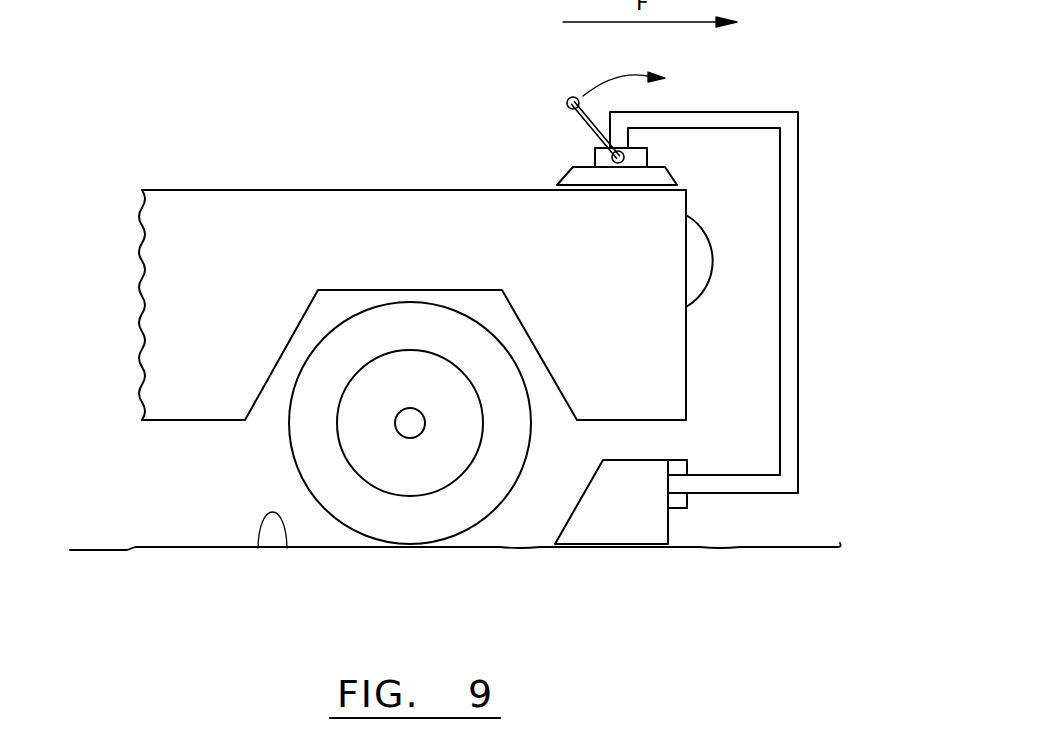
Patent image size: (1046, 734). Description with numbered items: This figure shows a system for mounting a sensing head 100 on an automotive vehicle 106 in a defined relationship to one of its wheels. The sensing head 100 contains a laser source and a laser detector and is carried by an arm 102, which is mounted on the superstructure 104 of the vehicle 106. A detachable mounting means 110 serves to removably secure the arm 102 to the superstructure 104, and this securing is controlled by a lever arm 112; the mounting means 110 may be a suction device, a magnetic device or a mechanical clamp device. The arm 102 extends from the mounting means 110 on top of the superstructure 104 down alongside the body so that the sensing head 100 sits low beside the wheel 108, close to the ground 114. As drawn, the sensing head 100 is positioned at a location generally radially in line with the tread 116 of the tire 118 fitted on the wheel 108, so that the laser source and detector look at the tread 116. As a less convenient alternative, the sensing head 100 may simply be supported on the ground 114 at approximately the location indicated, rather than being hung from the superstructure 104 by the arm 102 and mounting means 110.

The sensing head 100 is at (682, 525).
The arm 102 is at (798, 493).
The superstructure 104 is at (340, 187).
The automotive vehicle 106 is at (137, 245).
The wheel 108 is at (321, 437).
The detachable mounting means 110 is at (562, 153).
The lever arm 112 is at (569, 98).
The ground 114 is at (258, 548).
The tread 116 is at (408, 301).
The tire 118 is at (445, 513).